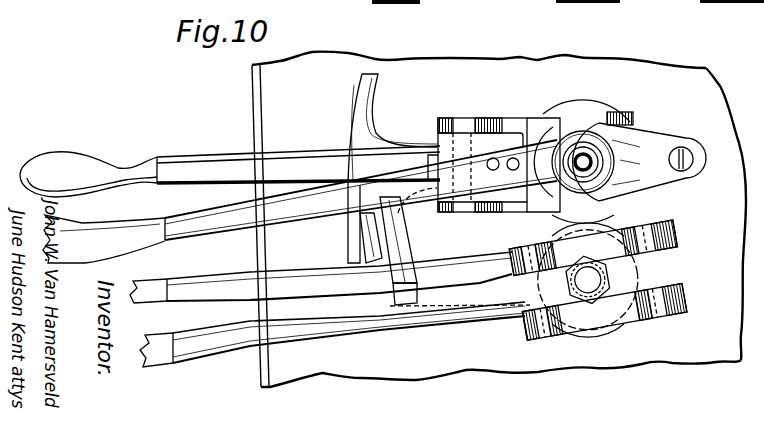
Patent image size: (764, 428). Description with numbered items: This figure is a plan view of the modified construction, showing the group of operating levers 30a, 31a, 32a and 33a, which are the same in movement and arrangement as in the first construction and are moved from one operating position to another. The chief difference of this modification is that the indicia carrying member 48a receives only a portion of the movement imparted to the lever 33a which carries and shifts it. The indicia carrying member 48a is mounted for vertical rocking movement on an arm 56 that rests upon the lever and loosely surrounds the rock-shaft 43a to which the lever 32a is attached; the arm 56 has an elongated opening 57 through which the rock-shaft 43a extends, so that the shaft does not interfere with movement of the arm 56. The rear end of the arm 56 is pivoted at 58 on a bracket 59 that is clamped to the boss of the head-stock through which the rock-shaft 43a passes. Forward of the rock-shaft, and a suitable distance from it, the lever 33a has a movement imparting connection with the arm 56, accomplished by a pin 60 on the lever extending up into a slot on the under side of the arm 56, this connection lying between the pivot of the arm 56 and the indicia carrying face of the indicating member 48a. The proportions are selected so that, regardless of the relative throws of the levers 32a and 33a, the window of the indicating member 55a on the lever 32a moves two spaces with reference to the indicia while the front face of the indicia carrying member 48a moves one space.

The lever 30a is at (212, 347).
The lever 31a is at (195, 285).
The lever 32a is at (190, 218).
The lever 33a is at (201, 158).
The rock-shaft 43a is at (585, 158).
The indicia carrying member 48a is at (392, 130).
The indicating member 55a is at (360, 250).
The arm 56 is at (510, 122).
The elongated opening 57 is at (577, 140).
The pivot 58 is at (689, 149).
The bracket 59 is at (657, 192).
The pin 60 is at (512, 171).